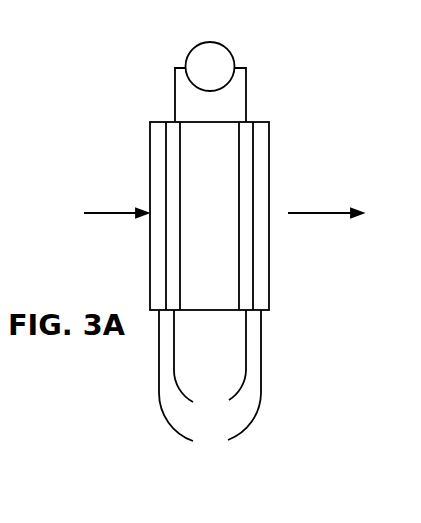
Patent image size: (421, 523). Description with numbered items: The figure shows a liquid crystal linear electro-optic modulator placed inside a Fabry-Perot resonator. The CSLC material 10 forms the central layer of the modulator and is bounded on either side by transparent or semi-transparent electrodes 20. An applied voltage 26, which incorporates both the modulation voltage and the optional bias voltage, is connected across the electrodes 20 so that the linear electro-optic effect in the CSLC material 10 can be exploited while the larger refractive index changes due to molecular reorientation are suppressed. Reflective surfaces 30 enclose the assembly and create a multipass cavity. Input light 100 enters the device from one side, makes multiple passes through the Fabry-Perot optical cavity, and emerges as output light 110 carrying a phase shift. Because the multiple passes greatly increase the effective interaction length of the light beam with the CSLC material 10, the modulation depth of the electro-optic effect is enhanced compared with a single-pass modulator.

The CSLC material 10 is at (204, 311).
The electrodes 20 is at (210, 361).
The applied voltage 26 is at (210, 42).
The reflective surfaces 30 is at (210, 383).
The input light 100 is at (107, 213).
The output light 110 is at (300, 213).